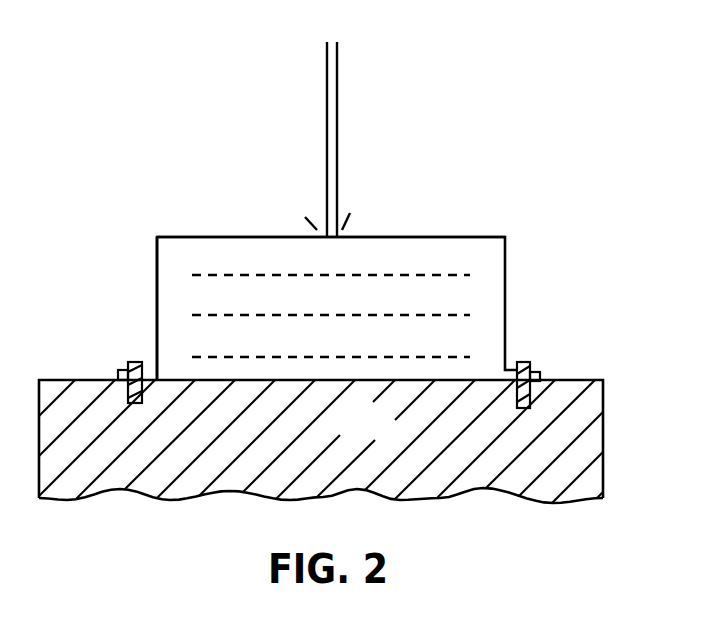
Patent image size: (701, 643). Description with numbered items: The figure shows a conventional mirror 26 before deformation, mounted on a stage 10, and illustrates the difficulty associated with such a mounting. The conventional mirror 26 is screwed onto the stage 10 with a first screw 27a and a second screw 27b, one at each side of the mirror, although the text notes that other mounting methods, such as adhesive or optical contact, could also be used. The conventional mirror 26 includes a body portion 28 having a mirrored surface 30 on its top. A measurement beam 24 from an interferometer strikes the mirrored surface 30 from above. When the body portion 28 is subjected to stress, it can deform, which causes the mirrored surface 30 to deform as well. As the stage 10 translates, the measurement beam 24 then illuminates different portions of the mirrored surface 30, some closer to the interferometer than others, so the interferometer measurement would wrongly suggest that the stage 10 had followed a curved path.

The stage 10 is at (385, 441).
The measurement beam 24 is at (327, 138).
The conventional mirror 26 is at (518, 310).
The first screw 27a is at (130, 362).
The second screw 27b is at (528, 362).
The body portion 28 is at (157, 294).
The mirrored surface 30 is at (208, 236).